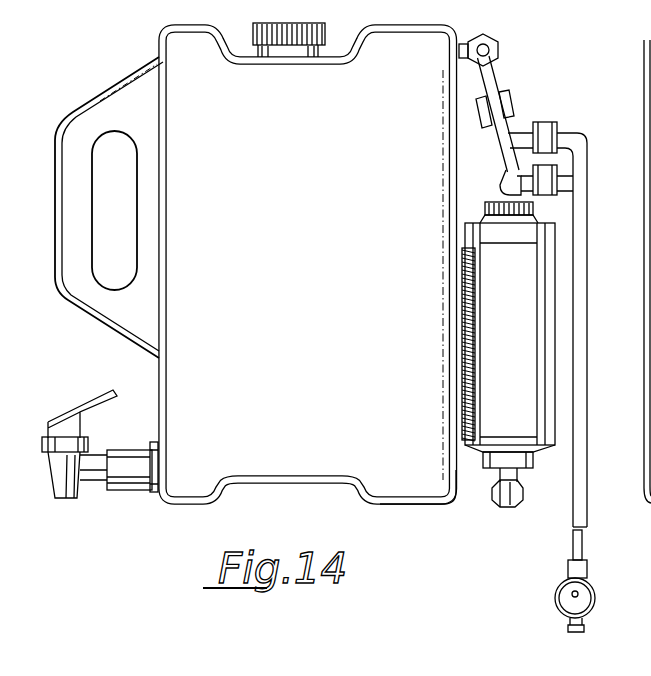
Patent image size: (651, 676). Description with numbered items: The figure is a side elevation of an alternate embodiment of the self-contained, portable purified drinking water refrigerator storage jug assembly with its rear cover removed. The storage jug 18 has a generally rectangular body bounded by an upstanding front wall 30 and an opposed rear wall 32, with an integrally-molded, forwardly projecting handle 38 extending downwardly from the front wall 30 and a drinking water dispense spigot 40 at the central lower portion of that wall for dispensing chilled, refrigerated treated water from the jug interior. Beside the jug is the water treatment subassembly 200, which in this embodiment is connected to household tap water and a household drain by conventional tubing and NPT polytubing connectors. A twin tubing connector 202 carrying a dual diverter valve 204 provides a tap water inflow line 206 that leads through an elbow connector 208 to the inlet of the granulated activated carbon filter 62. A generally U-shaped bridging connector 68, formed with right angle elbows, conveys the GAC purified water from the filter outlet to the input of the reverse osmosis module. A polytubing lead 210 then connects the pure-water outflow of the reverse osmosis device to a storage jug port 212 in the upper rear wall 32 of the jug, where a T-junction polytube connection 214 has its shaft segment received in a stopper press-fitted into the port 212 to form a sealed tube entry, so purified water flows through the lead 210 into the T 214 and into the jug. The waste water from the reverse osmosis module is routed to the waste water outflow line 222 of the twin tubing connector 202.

The storage jug 18 is at (320, 384).
The front wall 30 is at (157, 375).
The handle 38 is at (75, 182).
The rear wall 32 is at (464, 478).
The drinking water dispense spigot 40 is at (67, 468).
The granulated activated carbon filter 62 is at (522, 324).
The U-shaped bridging connector 68 is at (503, 503).
The water treatment subassembly 200 is at (560, 73).
The twin tubing connector 202 is at (572, 505).
The dual diverter valve 204 is at (553, 607).
The tap water inflow line 206 is at (563, 182).
The elbow connector 208 is at (518, 190).
The polytubing lead 210 is at (507, 151).
The storage jug port 212 is at (457, 57).
The T-junction polytube connection 214 is at (467, 47).
The waste water outflow line 222 is at (617, 116).